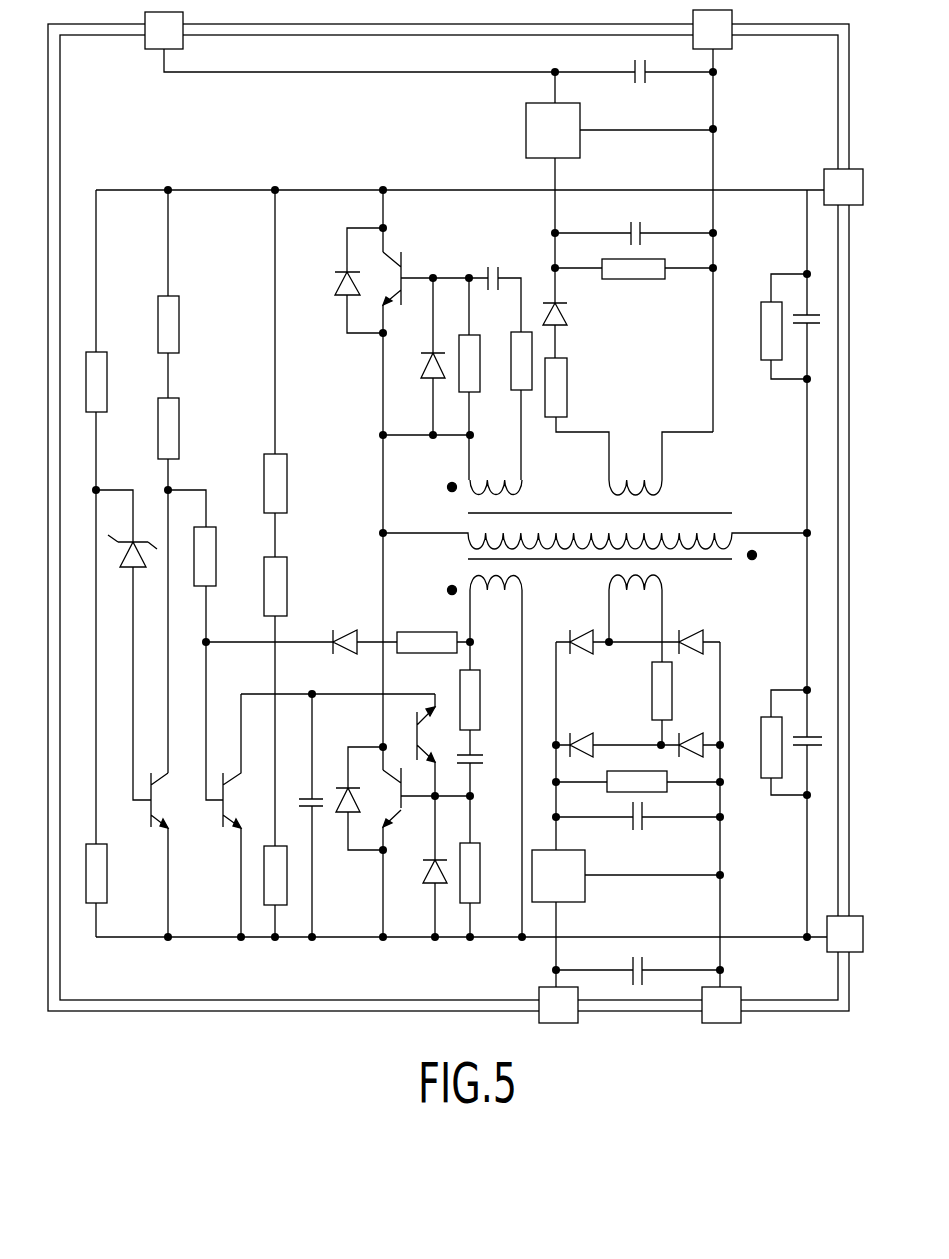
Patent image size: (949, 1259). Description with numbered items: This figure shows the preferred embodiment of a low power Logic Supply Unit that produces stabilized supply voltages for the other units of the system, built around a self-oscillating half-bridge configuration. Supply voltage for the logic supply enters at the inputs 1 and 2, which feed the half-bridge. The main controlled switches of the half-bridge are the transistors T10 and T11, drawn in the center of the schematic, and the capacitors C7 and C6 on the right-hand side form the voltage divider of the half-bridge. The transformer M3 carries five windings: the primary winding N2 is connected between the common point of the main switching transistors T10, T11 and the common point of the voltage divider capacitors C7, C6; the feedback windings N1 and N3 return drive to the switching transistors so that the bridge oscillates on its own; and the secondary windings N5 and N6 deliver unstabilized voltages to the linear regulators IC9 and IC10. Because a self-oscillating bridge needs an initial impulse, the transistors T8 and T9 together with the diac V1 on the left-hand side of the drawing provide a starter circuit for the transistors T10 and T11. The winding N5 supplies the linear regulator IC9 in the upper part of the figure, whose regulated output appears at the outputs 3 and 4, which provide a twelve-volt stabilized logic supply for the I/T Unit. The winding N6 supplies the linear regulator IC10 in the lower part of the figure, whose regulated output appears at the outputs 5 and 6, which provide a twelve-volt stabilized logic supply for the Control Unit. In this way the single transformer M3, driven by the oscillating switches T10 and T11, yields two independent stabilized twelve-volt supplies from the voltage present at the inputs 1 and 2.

The input 1 is at (835, 553).
The input 2 is at (845, 934).
The output 3 is at (712, 221).
The output 4 is at (429, 47).
The output 5 is at (721, 832).
The output 6 is at (558, 962).
The linear regulator IC9 is at (598, 187).
The linear regulator IC10 is at (626, 876).
The transistor T8 is at (150, 855).
The transistor T9 is at (222, 815).
The transistor T10 is at (368, 816).
The transistor T11 is at (368, 299).
The diac V1 is at (338, 658).
The feedback winding N1 is at (485, 756).
The primary winding N2 is at (595, 525).
The feedback winding N3 is at (485, 475).
The secondary winding N5 is at (635, 476).
The secondary winding N6 is at (640, 660).
The transformer M3 is at (595, 697).
The voltage divider capacitor C6 is at (791, 758).
The voltage divider capacitor C7 is at (790, 343).